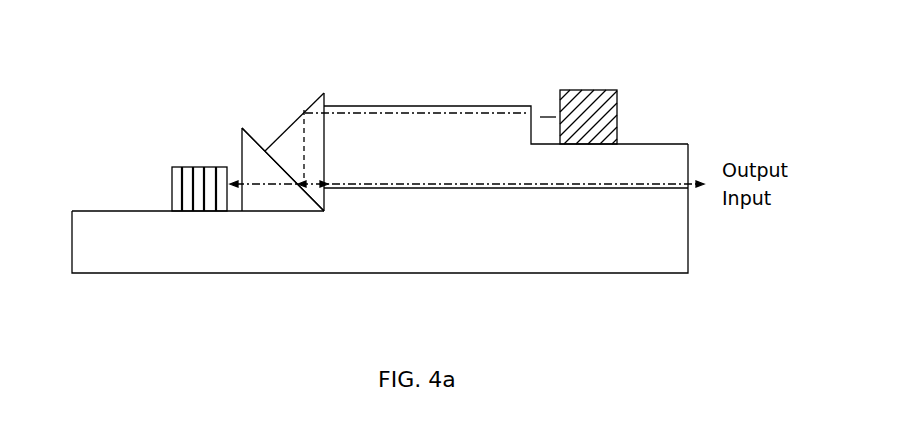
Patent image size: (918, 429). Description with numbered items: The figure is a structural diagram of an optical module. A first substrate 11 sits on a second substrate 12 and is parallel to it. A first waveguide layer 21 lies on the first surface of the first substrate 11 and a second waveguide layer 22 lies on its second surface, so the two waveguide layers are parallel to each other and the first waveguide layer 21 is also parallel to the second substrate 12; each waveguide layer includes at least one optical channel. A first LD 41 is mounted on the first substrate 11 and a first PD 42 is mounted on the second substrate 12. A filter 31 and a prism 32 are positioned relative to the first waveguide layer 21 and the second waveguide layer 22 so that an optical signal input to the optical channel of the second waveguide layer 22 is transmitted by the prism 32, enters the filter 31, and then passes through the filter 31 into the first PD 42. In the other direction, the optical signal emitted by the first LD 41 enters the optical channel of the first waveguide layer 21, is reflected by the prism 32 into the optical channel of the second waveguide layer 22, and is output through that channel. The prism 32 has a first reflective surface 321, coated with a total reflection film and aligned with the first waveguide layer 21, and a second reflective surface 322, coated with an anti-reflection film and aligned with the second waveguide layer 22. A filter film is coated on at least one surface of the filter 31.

The first substrate 11 is at (372, 150).
The second substrate 12 is at (458, 247).
The first waveguide layer 21 is at (474, 106).
The second waveguide layer 22 is at (607, 183).
The filter 31 is at (262, 190).
The prism 32 is at (295, 153).
The first reflective surface 321 is at (305, 114).
The second reflective surface 322 is at (288, 178).
The first LD 41 is at (588, 90).
The first PD 42 is at (200, 188).